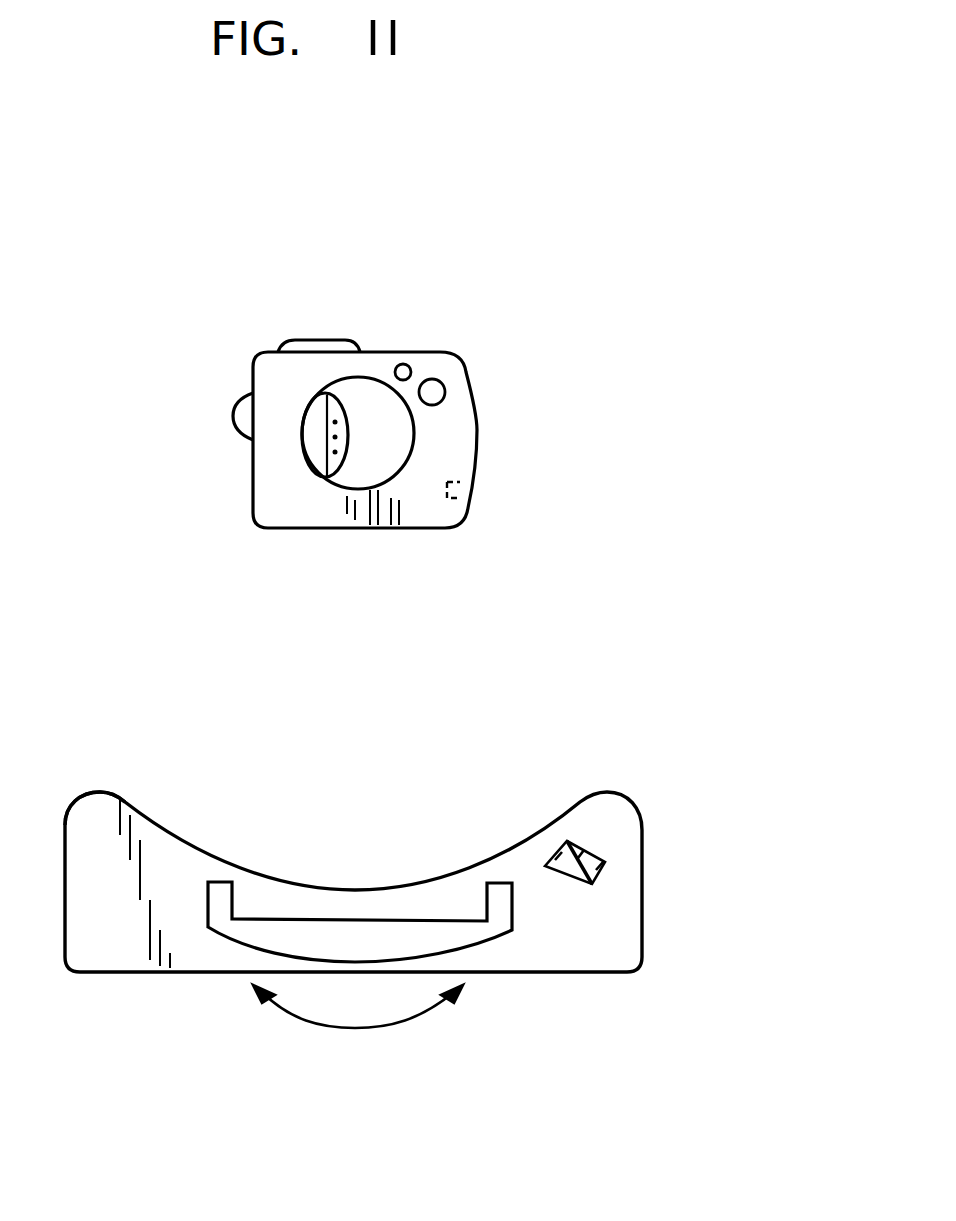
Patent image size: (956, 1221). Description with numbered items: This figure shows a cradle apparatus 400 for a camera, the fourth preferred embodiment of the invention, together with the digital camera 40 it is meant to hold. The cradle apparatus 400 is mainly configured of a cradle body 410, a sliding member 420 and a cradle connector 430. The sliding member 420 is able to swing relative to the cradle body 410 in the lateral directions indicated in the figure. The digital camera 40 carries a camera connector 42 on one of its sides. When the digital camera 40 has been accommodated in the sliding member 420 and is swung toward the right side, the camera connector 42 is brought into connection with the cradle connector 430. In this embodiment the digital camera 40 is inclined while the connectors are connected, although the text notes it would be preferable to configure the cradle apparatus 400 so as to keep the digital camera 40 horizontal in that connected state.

The digital camera 40 is at (474, 410).
The camera connector 42 is at (472, 492).
The cradle apparatus 400 is at (454, 784).
The cradle body 410 is at (95, 788).
The sliding member 420 is at (345, 920).
The cradle connector 430 is at (597, 852).